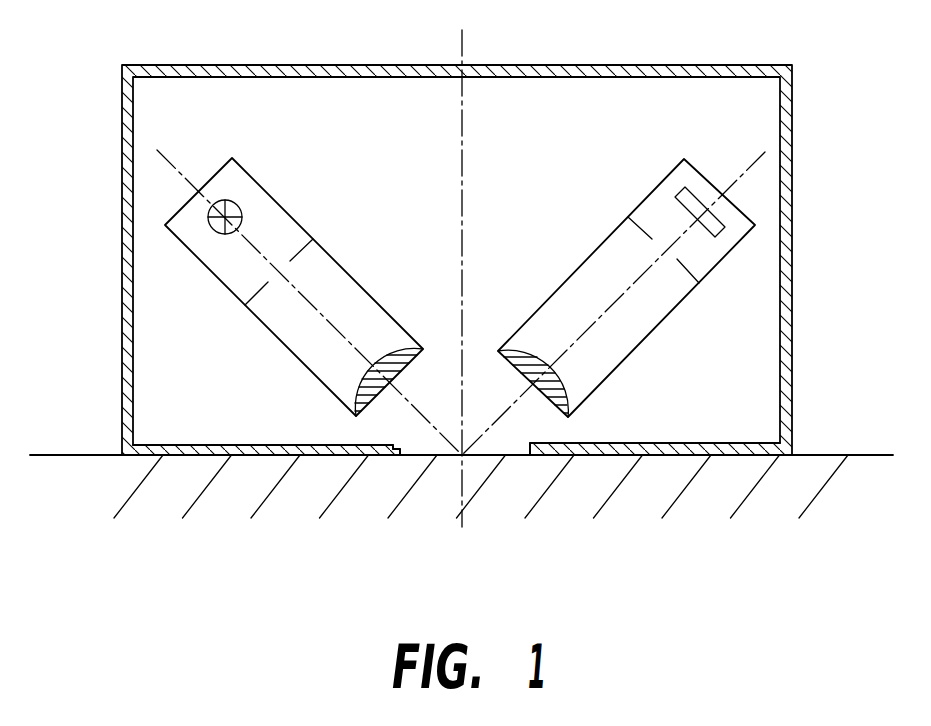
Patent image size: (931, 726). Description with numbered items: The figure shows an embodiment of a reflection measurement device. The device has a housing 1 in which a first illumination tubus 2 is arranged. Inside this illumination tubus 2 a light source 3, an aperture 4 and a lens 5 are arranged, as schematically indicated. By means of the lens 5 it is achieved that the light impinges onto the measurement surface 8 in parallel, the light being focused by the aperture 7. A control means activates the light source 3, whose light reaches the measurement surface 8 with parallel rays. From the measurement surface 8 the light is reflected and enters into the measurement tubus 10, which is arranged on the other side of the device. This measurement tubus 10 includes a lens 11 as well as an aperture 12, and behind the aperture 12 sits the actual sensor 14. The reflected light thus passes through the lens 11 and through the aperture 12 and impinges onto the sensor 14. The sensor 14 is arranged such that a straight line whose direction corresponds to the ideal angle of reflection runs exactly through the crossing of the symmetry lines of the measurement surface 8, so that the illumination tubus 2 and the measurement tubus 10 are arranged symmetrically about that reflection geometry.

The housing 1 is at (208, 63).
The first illumination tubus 2 is at (240, 282).
The light source 3 is at (235, 202).
The aperture 4 is at (262, 298).
The lens 5 is at (356, 386).
The aperture 7 is at (397, 450).
The measurement surface 8 is at (492, 457).
The measurement tubus 10 is at (652, 302).
The lens 11 is at (566, 384).
The aperture 12 is at (637, 231).
The sensor 14 is at (690, 194).